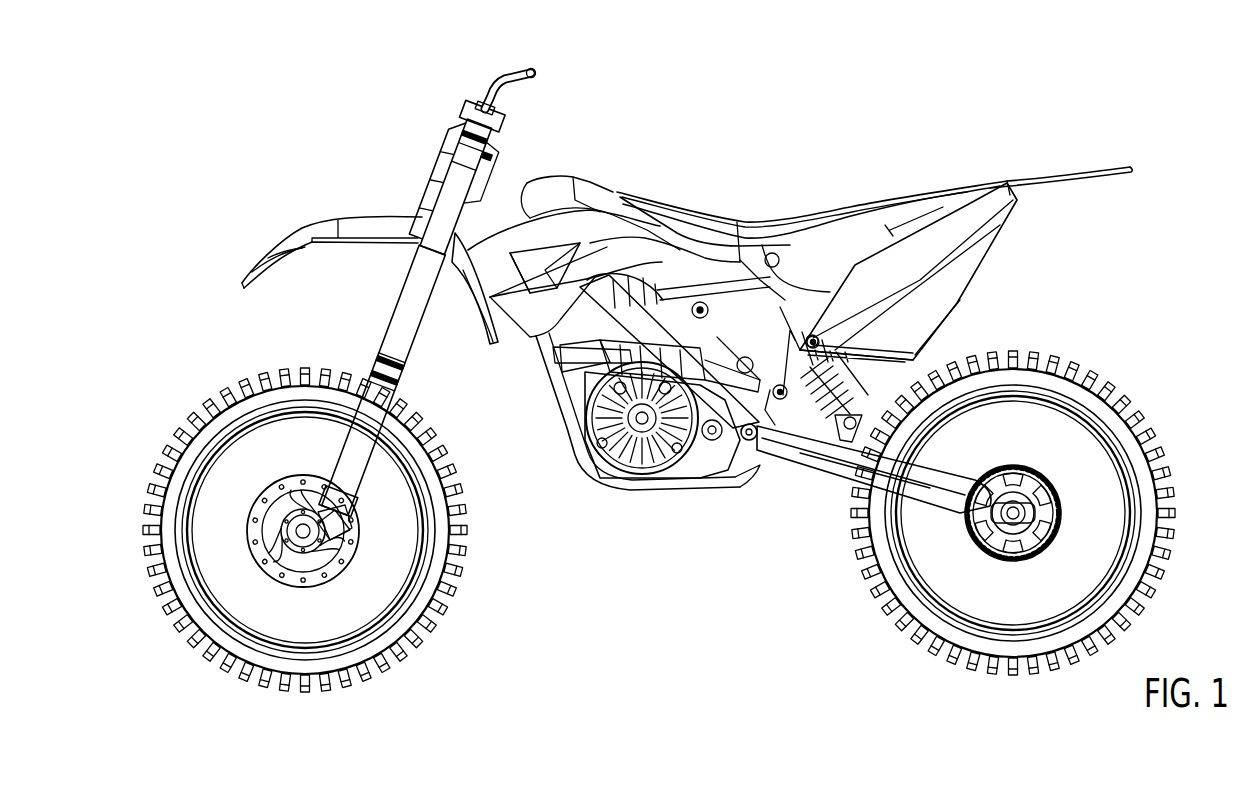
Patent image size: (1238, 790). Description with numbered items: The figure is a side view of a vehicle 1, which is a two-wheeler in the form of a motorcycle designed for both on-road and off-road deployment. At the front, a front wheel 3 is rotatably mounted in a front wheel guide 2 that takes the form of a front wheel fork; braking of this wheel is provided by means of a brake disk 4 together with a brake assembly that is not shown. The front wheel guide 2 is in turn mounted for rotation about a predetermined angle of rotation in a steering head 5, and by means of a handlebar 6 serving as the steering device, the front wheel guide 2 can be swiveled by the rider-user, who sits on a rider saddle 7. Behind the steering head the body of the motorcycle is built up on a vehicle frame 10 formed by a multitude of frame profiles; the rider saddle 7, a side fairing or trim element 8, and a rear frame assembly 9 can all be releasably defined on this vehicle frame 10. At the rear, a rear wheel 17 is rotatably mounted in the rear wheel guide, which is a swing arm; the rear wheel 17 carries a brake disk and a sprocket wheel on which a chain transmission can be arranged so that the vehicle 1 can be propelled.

The vehicle 1 is at (655, 634).
The front wheel guide 2 is at (412, 323).
The front wheel 3 is at (441, 553).
The brake disk 4 is at (342, 547).
The steering head 5 is at (460, 172).
The handlebar 6 is at (532, 69).
The rider saddle 7 is at (798, 228).
The side fairing or trim element 8 is at (850, 257).
The rear frame assembly 9 is at (990, 222).
The vehicle frame 10 is at (692, 503).
The rear wheel 17 is at (1122, 390).